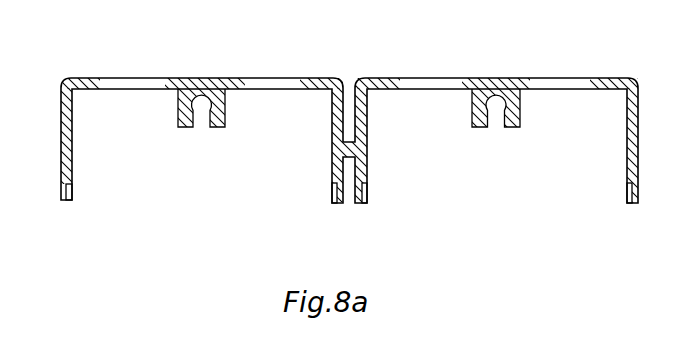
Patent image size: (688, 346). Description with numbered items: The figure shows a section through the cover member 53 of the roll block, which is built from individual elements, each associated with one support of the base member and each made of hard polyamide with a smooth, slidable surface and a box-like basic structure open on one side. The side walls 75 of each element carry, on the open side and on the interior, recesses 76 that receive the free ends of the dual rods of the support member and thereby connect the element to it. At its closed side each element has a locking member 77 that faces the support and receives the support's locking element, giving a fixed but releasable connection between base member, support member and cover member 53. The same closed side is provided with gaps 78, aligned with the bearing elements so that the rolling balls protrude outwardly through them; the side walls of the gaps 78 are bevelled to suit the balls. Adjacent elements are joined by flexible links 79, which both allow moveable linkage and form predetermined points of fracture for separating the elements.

The cover member 53 is at (262, 55).
The side walls 75 is at (63, 157).
The recesses 76 is at (75, 188).
The locking member 77 is at (177, 127).
The gaps 78 is at (98, 80).
The flexible links 79 is at (352, 140).